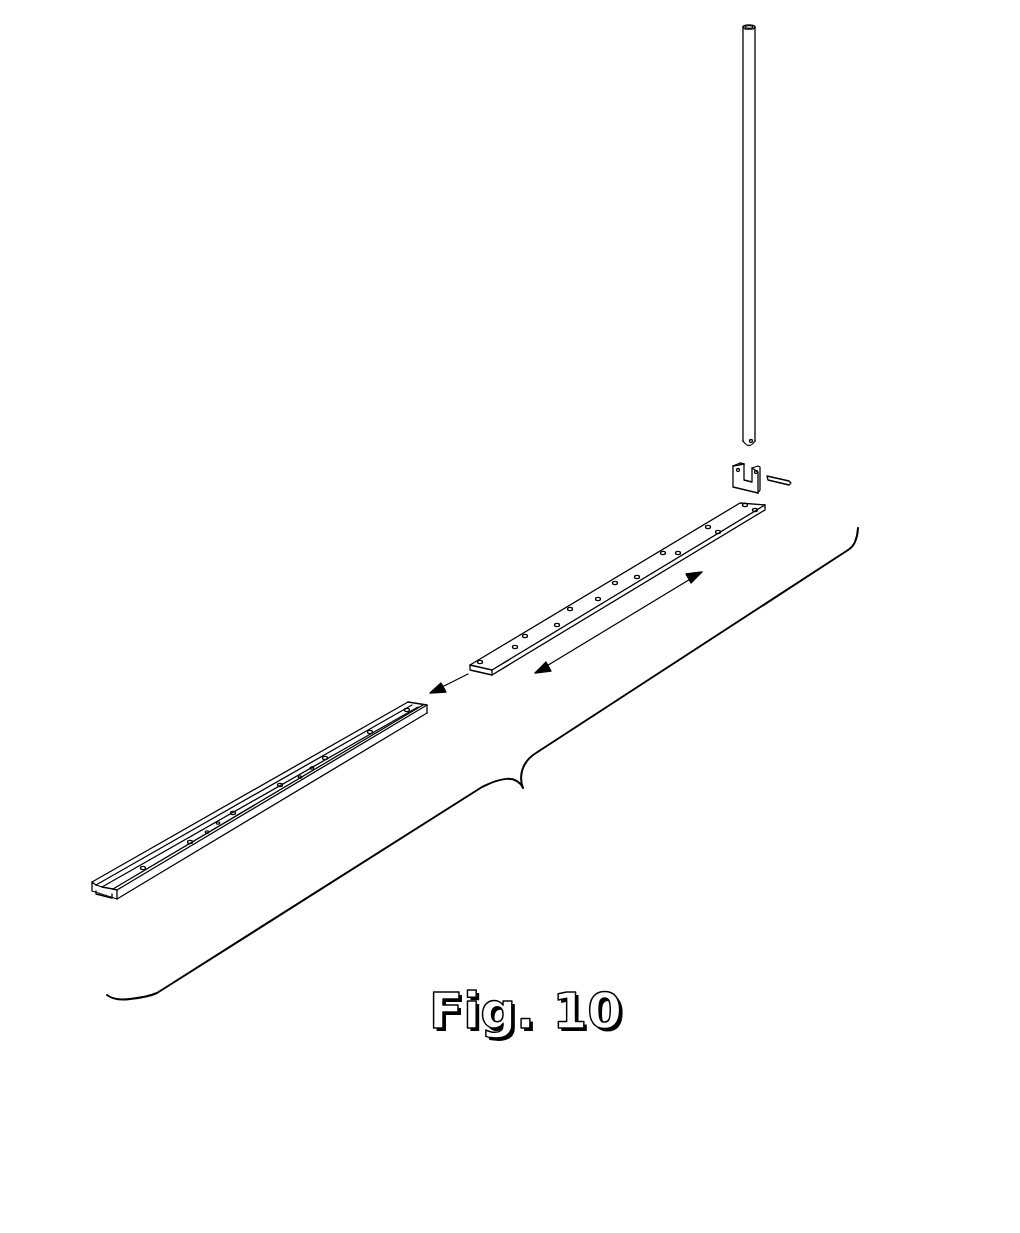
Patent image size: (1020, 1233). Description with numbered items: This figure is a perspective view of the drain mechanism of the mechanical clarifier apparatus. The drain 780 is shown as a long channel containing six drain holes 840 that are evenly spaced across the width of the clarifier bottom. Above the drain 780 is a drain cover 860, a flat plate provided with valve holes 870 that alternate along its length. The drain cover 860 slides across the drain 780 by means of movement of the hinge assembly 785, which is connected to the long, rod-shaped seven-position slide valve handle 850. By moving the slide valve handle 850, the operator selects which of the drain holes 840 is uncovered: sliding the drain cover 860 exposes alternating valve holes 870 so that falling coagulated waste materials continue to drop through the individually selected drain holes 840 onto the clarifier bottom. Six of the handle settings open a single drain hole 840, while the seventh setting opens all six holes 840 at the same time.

The drain 780 is at (241, 789).
The hinge assembly 785 is at (772, 460).
The drain holes 840 is at (103, 830).
The slide valve handle 850 is at (755, 247).
The drain cover 860 is at (602, 589).
The valve holes 870 is at (570, 607).